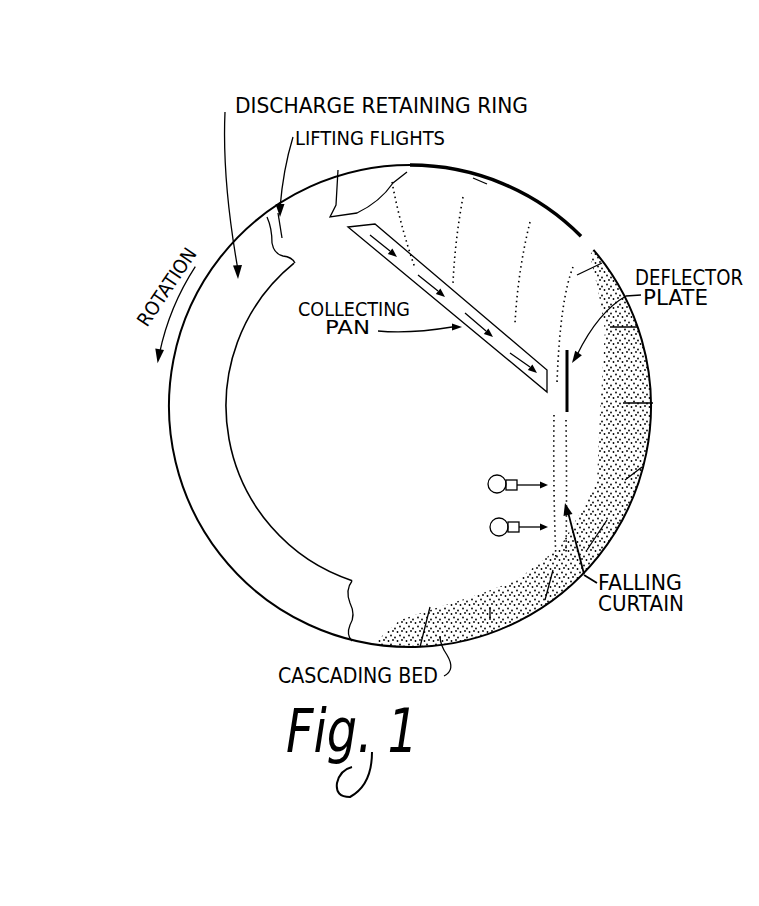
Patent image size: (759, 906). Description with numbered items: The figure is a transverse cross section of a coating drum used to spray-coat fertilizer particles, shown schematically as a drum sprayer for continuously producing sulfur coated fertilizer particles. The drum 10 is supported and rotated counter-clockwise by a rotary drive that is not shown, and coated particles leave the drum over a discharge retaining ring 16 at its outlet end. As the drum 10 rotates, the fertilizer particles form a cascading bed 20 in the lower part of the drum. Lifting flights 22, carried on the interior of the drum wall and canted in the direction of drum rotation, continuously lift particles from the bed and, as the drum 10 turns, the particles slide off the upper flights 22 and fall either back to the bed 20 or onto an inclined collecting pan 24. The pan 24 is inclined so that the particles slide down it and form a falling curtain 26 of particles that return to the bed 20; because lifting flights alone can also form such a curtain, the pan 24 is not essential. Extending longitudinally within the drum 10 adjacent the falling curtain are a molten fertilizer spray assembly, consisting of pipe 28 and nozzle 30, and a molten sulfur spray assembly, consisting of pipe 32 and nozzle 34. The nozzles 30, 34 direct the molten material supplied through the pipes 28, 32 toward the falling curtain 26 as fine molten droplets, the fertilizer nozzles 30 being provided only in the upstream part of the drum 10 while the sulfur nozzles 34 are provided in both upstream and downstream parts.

The drum 10 is at (522, 192).
The discharge retaining ring 16 is at (230, 442).
The cascading bed 20 is at (447, 600).
The lifting flights 22 is at (332, 218).
The collecting pan 24 is at (452, 294).
The falling curtain 26 is at (563, 413).
The molten fertilizer supply pipe 28 is at (489, 482).
The fertilizer spray nozzle 30 is at (512, 479).
The molten sulfur supply pipe 32 is at (490, 530).
The sulfur spray nozzle 34 is at (513, 521).